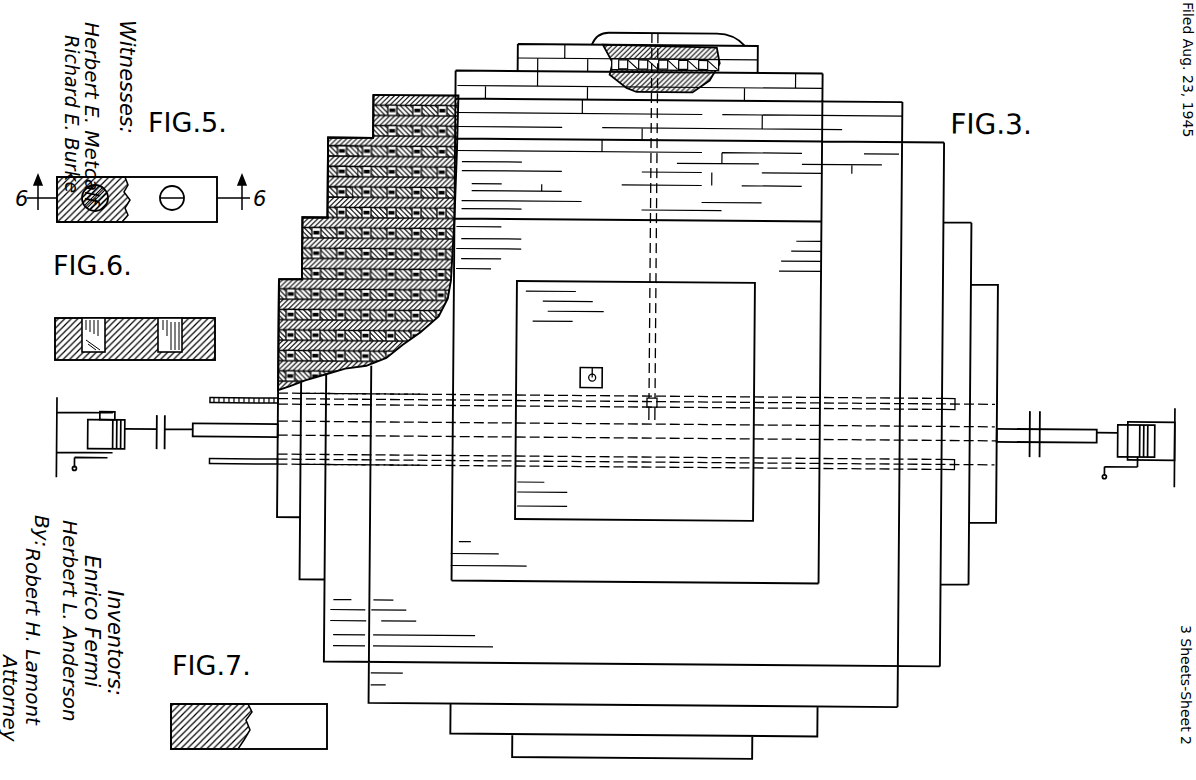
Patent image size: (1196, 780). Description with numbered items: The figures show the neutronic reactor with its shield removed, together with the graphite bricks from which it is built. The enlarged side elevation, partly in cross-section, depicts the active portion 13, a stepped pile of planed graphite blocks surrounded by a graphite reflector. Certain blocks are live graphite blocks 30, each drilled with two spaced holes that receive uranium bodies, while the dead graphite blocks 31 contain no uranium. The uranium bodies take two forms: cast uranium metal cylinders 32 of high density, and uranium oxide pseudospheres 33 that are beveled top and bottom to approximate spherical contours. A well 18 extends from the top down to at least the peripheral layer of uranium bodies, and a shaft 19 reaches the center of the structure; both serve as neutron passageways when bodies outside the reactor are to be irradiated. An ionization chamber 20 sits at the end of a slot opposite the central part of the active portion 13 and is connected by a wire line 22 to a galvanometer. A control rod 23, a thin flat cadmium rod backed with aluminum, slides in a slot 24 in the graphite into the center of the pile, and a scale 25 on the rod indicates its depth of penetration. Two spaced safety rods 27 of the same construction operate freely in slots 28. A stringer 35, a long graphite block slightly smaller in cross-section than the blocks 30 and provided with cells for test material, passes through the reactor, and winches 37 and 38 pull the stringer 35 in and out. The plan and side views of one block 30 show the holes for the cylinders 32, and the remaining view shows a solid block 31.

In FIG. 3, the active portion 13 is at (350, 110).
In FIG. 3, the well 18 is at (598, 34).
In FIG. 3, the shaft 19 is at (660, 183).
In FIG. 3, the ionization chamber 20 is at (597, 348).
In FIG. 3, the wire line 22 is at (580, 377).
In FIG. 3, the control rod 23 is at (223, 401).
In FIG. 3, the slot 24 is at (404, 397).
In FIG. 3, the scale 25 is at (262, 390).
In FIG. 3, the safety rods 27 is at (240, 467).
In FIG. 3, the slots 28 is at (404, 468).
In FIG. 3, the live graphite blocks 30 is at (326, 152).
In FIG. 5, the live graphite blocks 30 is at (148, 188).
In FIG. 6, the live graphite blocks 30 is at (126, 330).
In FIG. 3, the dead graphite blocks 31 is at (348, 138).
In FIG. 7, the dead graphite blocks 31 is at (290, 712).
In FIG. 5, the uranium metal cylinders 32 is at (172, 210).
In FIG. 6, the uranium metal cylinders 32 is at (100, 318).
In FIG. 3, the uranium oxide pseudospheres 33 is at (326, 174).
In FIG. 3, the stringer 35 is at (213, 432).
In FIG. 3, the winch 37 is at (1140, 458).
In FIG. 3, the winch 38 is at (118, 448).